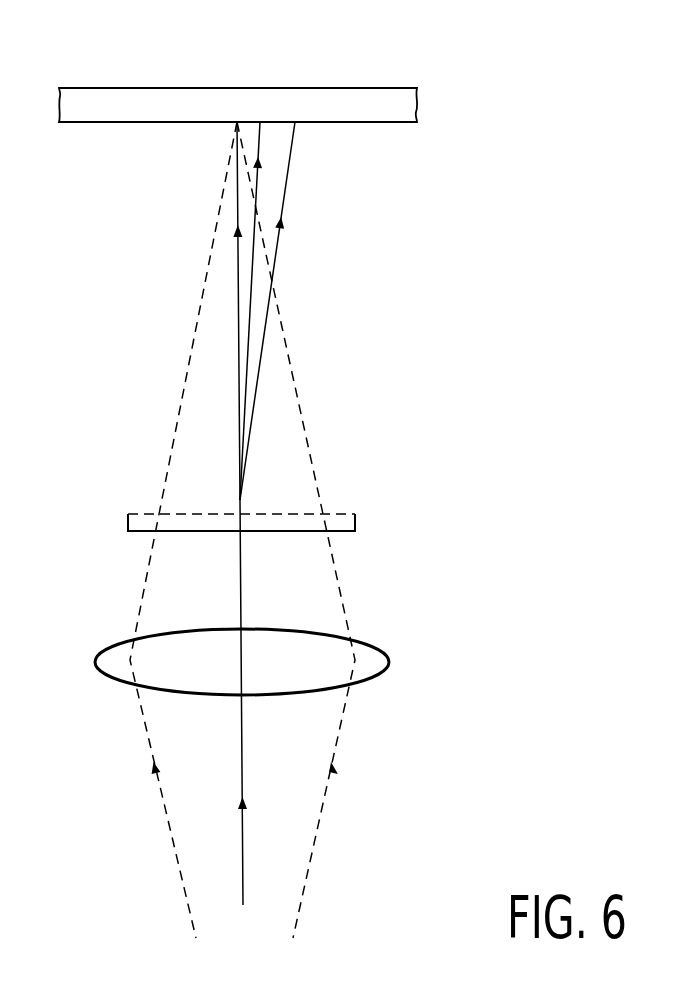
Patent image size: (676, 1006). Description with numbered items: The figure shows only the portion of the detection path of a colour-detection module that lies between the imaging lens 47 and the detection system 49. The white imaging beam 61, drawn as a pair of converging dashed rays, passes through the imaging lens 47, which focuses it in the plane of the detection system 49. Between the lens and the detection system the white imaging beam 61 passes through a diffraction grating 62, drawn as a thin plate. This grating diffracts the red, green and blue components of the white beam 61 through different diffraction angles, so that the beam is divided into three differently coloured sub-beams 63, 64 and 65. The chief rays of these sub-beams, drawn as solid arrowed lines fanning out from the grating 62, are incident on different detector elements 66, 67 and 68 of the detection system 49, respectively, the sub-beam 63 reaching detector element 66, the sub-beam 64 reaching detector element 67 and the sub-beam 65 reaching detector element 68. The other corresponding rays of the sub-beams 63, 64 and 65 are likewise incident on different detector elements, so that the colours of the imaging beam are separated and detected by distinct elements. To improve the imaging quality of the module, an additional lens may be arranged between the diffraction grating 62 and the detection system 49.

The imaging lens 47 is at (96, 661).
The detection system 49 is at (356, 96).
The white imaging beam 61 is at (190, 837).
The diffraction grating 62 is at (128, 523).
The coloured sub-beam 63 is at (237, 278).
The coloured sub-beam 64 is at (251, 296).
The coloured sub-beam 65 is at (279, 250).
The detector element 66 is at (237, 124).
The detector element 67 is at (260, 124).
The detector element 68 is at (295, 124).